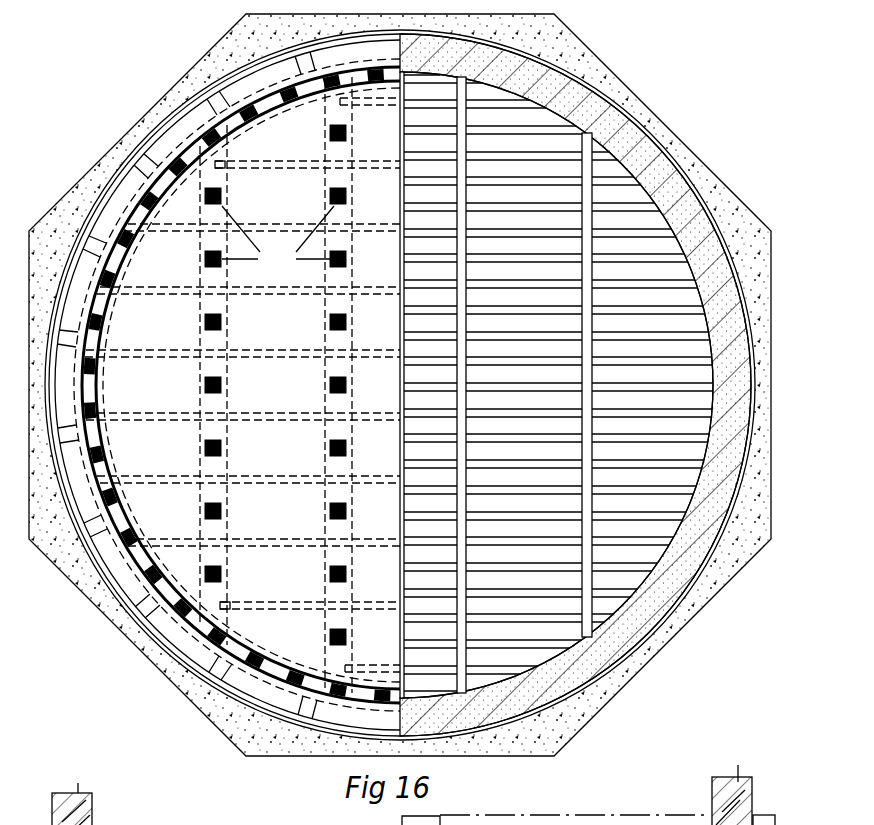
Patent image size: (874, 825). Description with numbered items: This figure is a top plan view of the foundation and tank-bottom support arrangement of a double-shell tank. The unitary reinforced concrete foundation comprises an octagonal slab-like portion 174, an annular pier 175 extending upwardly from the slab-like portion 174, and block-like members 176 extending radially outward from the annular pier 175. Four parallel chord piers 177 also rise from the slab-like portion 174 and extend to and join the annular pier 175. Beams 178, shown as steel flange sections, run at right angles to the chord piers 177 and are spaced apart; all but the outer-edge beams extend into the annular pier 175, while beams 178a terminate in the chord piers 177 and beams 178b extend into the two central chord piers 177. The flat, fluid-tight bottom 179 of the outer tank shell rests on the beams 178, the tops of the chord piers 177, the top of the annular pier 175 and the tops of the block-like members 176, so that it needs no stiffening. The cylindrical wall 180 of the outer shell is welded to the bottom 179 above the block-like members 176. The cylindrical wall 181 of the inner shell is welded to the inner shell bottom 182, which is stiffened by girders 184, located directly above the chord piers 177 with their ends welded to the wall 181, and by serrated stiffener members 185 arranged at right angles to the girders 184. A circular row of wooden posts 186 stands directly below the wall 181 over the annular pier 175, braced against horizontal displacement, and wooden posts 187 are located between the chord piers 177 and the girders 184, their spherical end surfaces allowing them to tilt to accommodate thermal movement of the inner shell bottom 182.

The slab-like portion 174 is at (578, 718).
The annular pier 175 is at (107, 455).
The block-like members 176 is at (312, 720).
The chord piers 177 is at (342, 429).
The beams 178 is at (253, 351).
The beams 178a is at (256, 606).
The beams 178b is at (362, 672).
The bottom of the outer tank shell 179 is at (250, 394).
The cylindrical wall of the outer shell 180 is at (752, 787).
The cylindrical wall of the inner shell 181 is at (712, 792).
The bottom of the inner shell 182 is at (490, 296).
The girders 184 is at (589, 394).
The serrated stiffener members 185 is at (572, 485).
The wooden posts 186 is at (118, 278).
The wooden posts 187 is at (278, 237).